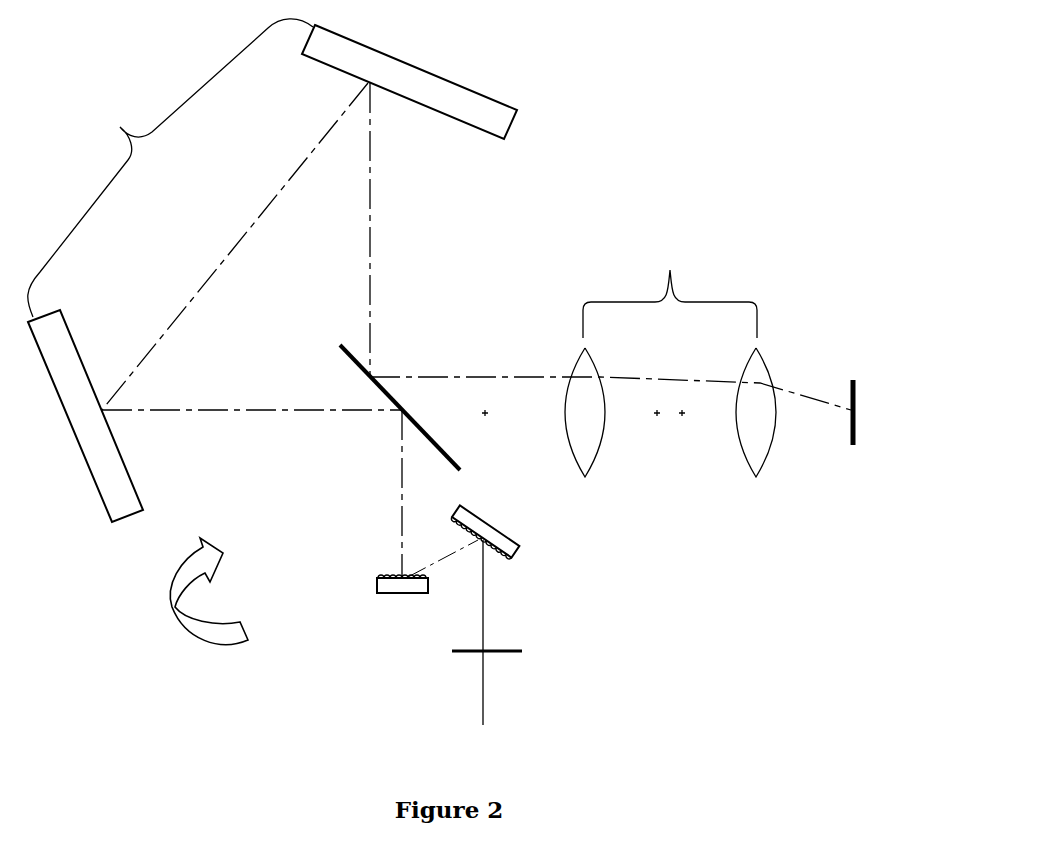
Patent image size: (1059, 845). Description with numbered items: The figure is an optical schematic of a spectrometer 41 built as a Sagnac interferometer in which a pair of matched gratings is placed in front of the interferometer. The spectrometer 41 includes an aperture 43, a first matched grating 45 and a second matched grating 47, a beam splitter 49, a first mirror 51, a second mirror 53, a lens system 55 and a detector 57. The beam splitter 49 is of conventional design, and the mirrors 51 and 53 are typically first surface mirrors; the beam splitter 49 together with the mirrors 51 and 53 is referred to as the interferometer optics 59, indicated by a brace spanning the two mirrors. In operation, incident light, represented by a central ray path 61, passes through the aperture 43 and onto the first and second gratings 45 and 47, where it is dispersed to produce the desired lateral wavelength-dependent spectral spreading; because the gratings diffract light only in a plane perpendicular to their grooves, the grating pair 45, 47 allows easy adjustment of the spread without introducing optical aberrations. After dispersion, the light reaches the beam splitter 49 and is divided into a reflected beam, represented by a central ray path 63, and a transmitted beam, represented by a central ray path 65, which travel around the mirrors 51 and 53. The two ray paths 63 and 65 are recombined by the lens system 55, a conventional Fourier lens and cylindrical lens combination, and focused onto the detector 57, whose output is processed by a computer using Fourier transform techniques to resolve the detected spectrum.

The spectrometer 41 is at (227, 594).
The aperture 43 is at (486, 644).
The first matched grating 45 is at (496, 521).
The second matched grating 47 is at (400, 597).
The beam splitter 49 is at (361, 369).
The first mirror 51 is at (85, 416).
The second mirror 53 is at (409, 82).
The lens system 55 is at (670, 357).
The detector 57 is at (858, 399).
The interferometer optics 59 is at (198, 214).
The central ray path 61 is at (477, 680).
The central ray path of reflected beam 63 is at (233, 408).
The central ray path of transmitted beam 65 is at (404, 228).